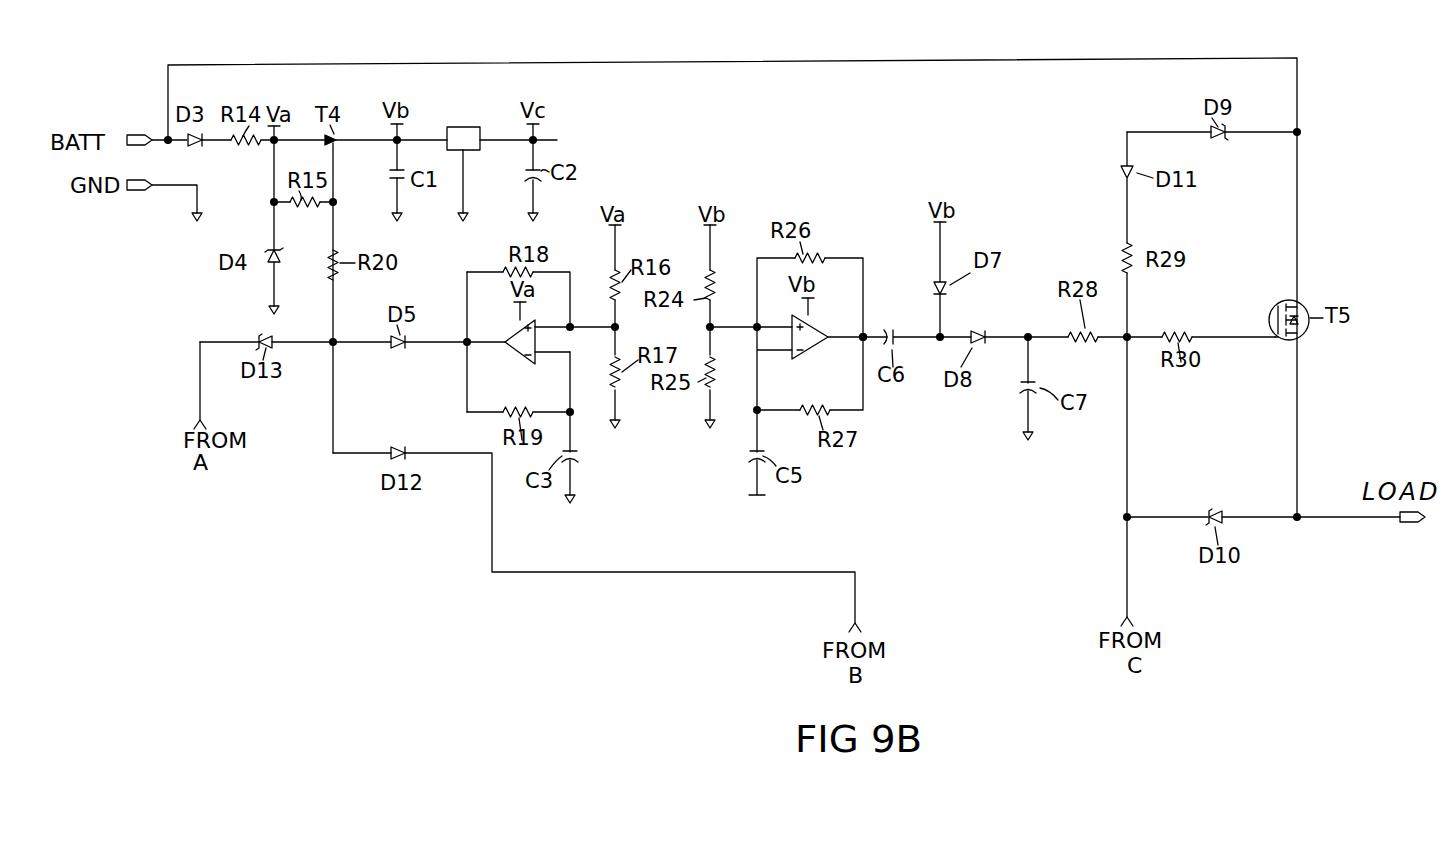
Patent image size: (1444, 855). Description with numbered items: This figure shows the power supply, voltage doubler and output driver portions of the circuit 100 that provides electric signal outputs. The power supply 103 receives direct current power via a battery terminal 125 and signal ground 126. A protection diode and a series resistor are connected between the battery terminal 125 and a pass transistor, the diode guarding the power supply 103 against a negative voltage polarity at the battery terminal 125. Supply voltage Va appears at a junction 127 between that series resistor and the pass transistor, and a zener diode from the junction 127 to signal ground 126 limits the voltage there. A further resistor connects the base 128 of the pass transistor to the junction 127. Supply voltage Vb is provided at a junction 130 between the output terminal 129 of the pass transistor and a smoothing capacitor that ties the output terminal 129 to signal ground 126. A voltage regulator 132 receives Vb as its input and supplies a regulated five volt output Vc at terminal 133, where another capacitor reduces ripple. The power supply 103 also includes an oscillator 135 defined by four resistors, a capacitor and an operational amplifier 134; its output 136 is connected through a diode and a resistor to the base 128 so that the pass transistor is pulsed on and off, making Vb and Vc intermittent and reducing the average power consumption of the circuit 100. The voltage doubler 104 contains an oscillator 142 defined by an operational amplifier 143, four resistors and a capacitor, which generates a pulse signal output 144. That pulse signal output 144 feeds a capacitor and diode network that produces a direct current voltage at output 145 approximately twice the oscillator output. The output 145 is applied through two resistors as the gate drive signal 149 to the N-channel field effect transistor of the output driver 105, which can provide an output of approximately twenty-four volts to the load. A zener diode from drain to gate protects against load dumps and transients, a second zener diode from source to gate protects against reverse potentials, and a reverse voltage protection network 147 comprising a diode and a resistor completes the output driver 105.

The circuit 100 is at (708, 43).
The power supply 103 is at (603, 168).
The voltage doubler 104 is at (981, 183).
The output driver 105 is at (1318, 292).
The battery terminal 125 is at (136, 133).
The signal ground 126 is at (142, 192).
The junction 127 is at (278, 137).
The base of transistor T4 128 is at (336, 143).
The output terminal of transistor T4 129 is at (340, 137).
The junction 130 is at (400, 136).
The voltage regulator 132 is at (480, 151).
The terminal 133 is at (562, 137).
The operational amplifier 134 is at (515, 353).
The oscillator 135 is at (592, 438).
The output of oscillator 136 is at (465, 346).
The oscillator 142 is at (892, 415).
The operational amplifier 143 is at (813, 349).
The pulse signal output 144 is at (867, 333).
The output of voltage doubler 145 is at (1028, 333).
The reverse voltage protection network 147 is at (1213, 243).
The gate drive signal 149 is at (1131, 332).